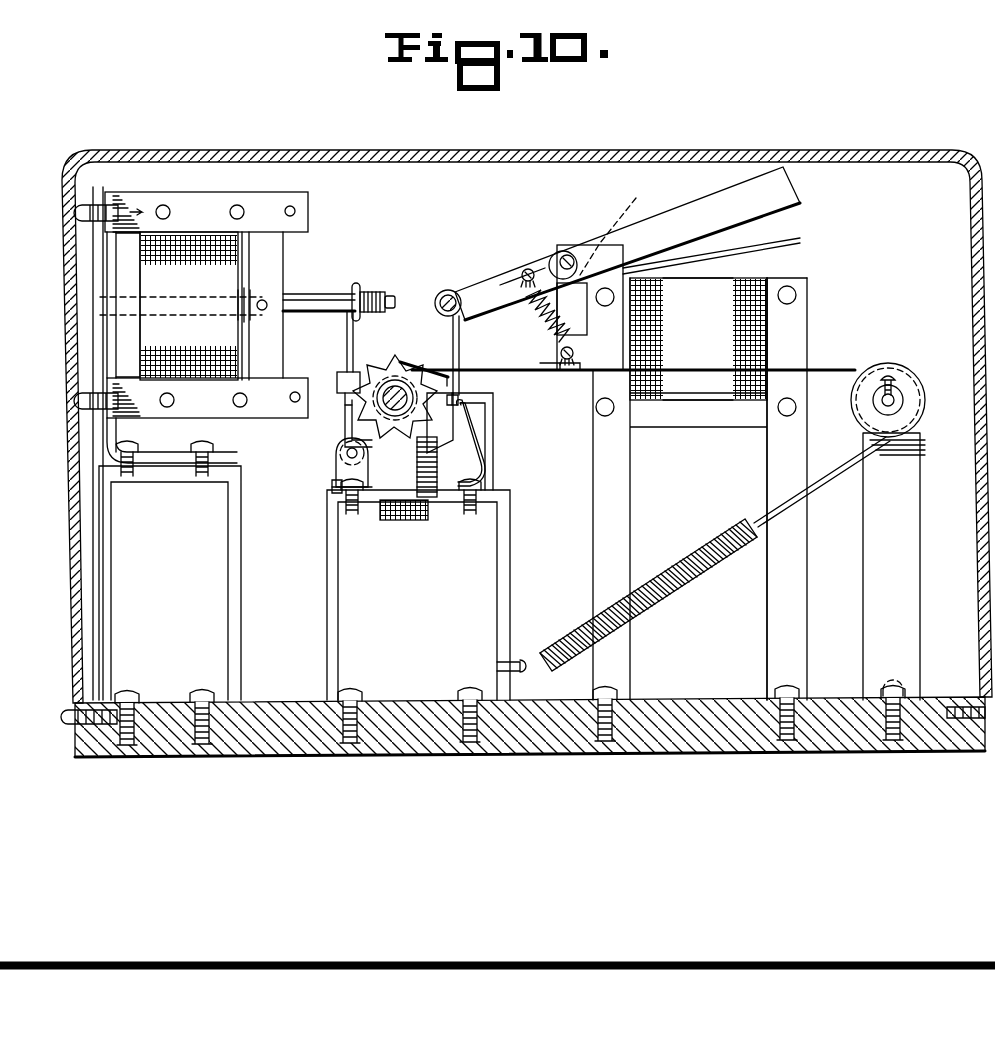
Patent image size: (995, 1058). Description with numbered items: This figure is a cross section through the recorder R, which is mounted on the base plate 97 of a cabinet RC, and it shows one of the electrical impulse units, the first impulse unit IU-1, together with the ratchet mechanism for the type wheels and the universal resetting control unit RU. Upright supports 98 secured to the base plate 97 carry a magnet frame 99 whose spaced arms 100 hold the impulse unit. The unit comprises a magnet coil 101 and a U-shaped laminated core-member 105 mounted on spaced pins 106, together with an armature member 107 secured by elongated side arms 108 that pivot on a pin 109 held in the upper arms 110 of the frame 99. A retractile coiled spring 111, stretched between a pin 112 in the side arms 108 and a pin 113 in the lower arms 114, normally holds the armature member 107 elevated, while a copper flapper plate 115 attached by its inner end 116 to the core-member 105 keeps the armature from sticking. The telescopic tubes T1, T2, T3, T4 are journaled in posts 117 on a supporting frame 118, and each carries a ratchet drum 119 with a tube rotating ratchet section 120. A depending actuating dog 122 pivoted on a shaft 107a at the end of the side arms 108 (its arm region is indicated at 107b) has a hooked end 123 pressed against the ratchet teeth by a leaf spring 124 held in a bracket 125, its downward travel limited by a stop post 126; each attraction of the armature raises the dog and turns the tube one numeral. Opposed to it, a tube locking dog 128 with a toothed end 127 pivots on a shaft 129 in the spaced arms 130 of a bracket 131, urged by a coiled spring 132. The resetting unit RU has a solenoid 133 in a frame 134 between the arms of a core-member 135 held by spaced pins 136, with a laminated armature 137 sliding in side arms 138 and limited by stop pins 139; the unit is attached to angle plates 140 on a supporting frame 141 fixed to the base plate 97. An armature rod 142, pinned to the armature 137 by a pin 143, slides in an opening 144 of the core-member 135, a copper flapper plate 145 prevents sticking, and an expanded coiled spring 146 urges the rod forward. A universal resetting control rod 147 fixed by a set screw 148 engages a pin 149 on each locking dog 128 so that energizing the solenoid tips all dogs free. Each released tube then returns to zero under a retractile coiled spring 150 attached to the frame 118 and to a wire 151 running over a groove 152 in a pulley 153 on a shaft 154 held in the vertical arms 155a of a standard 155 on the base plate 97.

The base plate 97 is at (447, 757).
The upright supports 98 is at (593, 556).
The magnet frame 99 is at (587, 493).
The spaced arms 100 is at (808, 284).
The magnet coil 101 is at (713, 290).
The core-member 105 is at (711, 424).
The spaced pins 106 is at (596, 297).
The armature member 107 is at (626, 227).
The shaft 107a is at (446, 290).
The lever arm 107b is at (529, 262).
The side arms 108 is at (507, 269).
The pin 109 is at (573, 256).
The upper arms 110 is at (560, 252).
The retractile coiled spring 111 is at (540, 318).
The pin 112 is at (526, 268).
The pin 113 is at (550, 365).
The lower arms 114 is at (568, 370).
The copper flapper plate 115 is at (793, 239).
The inner end 116 is at (590, 307).
The posts 117 is at (414, 486).
The supporting frame 118 is at (510, 533).
The ratchet drum 119 is at (458, 392).
The tube rotating ratchet section 120 is at (401, 362).
The actuating dog 122 is at (460, 337).
The hooked end 123 is at (437, 438).
The leaf spring 124 is at (470, 455).
The bracket 125 is at (494, 416).
The stop post 126 is at (426, 505).
The toothed end 127 is at (359, 372).
The tube locking dog 128 is at (343, 410).
The shaft 129 is at (365, 456).
The spaced arms 130 is at (363, 470).
The bracket 131 is at (333, 489).
The coiled spring 132 is at (337, 460).
The solenoid 133 is at (210, 283).
The frame 134 is at (152, 202).
The core-member 135 is at (127, 343).
The spaced pins 136 is at (170, 208).
The armature 137 is at (268, 291).
The side arms 138 is at (267, 202).
The stop pins 139 is at (297, 213).
The angle plates 140 is at (100, 446).
The supporting frame 141 is at (242, 545).
The armature rod 142 is at (357, 283).
The pin 143 is at (267, 310).
The opening 144 is at (127, 298).
The copper flapper plate 145 is at (250, 258).
The coiled spring 146 is at (238, 317).
The universal resetting control rod 147 is at (373, 291).
The set screw 148 is at (395, 298).
The pin 149 is at (356, 332).
The retractile coiled spring 150 is at (672, 555).
The wire 151 is at (632, 350).
The groove 152 is at (919, 414).
The pulley 153 is at (906, 381).
The shaft 154 is at (903, 400).
The standard 155 is at (908, 682).
The vertical arms 155a is at (908, 532).
The recorder R is at (426, 205).
The cabinet RC is at (446, 149).
The universal resetting control unit RU is at (78, 214).
The electrical impulse unit IU-1 is at (781, 339).
The telescopic tube T1 is at (424, 363).
The telescopic tube T2 is at (452, 380).
The telescopic tube T3 is at (378, 395).
The telescopic tube T4 is at (347, 408).